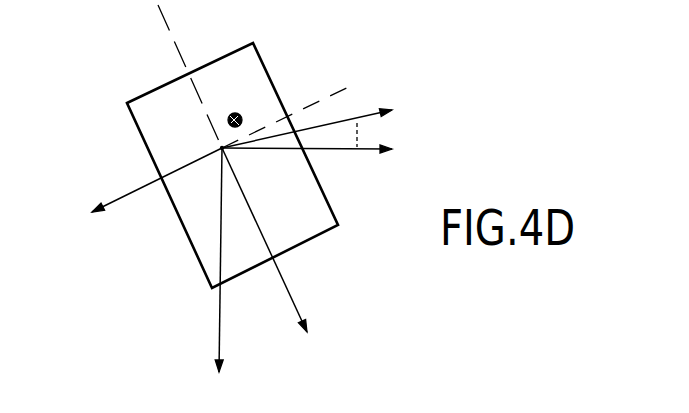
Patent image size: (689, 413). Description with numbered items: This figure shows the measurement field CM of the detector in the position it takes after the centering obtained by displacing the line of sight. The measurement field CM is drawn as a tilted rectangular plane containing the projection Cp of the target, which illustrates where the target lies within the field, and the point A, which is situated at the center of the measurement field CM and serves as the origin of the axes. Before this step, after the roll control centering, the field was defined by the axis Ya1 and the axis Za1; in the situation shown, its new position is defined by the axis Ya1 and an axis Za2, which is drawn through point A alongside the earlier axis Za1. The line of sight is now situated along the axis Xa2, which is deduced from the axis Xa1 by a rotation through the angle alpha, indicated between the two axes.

The measurement field CM is at (155, 88).
The projection of the target Cp is at (241, 112).
The point A is at (215, 148).
The axis AXa1 Xa1 is at (315, 166).
The axis AXa2 Xa2 is at (318, 112).
The axis AYa1 Ya1 is at (145, 180).
The axis AZa1 Za1 is at (196, 262).
The axis AZa2 Za2 is at (292, 244).